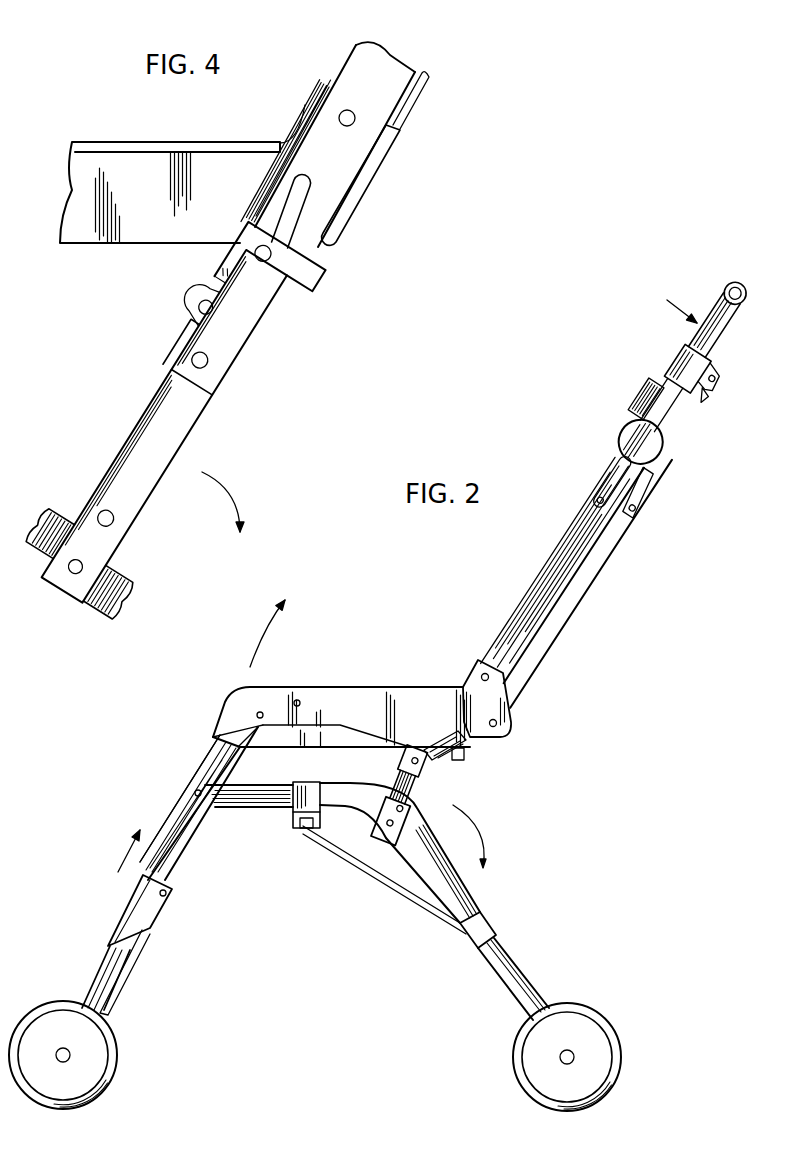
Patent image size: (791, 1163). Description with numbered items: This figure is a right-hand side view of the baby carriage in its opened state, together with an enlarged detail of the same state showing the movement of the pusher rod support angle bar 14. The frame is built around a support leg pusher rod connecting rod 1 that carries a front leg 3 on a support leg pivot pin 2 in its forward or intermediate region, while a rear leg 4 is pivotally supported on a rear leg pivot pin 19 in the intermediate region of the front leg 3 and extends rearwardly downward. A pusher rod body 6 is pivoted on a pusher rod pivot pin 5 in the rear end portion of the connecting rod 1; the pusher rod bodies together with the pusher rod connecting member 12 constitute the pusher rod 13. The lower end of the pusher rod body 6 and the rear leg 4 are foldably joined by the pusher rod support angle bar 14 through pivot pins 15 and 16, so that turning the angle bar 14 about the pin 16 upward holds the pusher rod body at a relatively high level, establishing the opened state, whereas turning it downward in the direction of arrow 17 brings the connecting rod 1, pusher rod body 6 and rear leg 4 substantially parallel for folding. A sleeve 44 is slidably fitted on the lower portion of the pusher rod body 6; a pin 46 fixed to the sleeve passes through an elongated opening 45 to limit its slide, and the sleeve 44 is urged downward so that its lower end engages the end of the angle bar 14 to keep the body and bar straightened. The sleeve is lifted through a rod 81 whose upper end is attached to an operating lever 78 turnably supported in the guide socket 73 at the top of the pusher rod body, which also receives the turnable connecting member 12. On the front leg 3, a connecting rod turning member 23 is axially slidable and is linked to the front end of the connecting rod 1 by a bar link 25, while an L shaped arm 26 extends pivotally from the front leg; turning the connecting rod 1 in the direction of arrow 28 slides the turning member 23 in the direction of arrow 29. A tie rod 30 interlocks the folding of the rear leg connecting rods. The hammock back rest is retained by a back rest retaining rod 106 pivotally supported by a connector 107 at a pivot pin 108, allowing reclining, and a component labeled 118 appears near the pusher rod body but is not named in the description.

In FIG. 4, the support leg pusher rod connecting rod 1 is at (110, 145).
In FIG. 2, the support leg pusher rod connecting rod 1 is at (296, 687).
In FIG. 2, the support leg pivot pin 2 is at (299, 701).
In FIG. 2, the front leg 3 is at (175, 818).
In FIG. 4, the rear leg 4 is at (58, 512).
In FIG. 2, the rear leg 4 is at (512, 962).
In FIG. 4, the pusher rod pivot pin 5 is at (338, 116).
In FIG. 2, the pusher rod pivot pin 5 is at (482, 675).
In FIG. 4, the pusher rod body 6 is at (343, 70).
In FIG. 2, the pusher rod body 6 is at (560, 556).
In FIG. 2, the pusher rod connecting member 12 is at (727, 290).
In FIG. 2, the pusher rod 13 is at (697, 318).
In FIG. 4, the pusher rod support angle bar 14 is at (173, 445).
In FIG. 2, the pusher rod support angle bar 14 is at (425, 800).
In FIG. 4, the pivot pin 15 is at (196, 306).
In FIG. 2, the pivot pin 15 is at (410, 760).
In FIG. 4, the pivot pin 16 is at (113, 518).
In FIG. 2, the pivot pin 16 is at (406, 812).
In FIG. 4, the arrow 17 is at (230, 497).
In FIG. 2, the arrow 17 is at (478, 832).
In FIG. 2, the rear leg pivot pin 19 is at (196, 790).
In FIG. 2, the connecting rod turning member 23 is at (135, 895).
In FIG. 2, the bar link 25 is at (200, 850).
In FIG. 2, the L shaped arm 26 is at (140, 962).
In FIG. 2, the arrow 28 is at (252, 629).
In FIG. 2, the arrow 29 is at (116, 850).
In FIG. 2, the tie rod 30 is at (366, 868).
In FIG. 4, the sleeve 44 is at (283, 300).
In FIG. 2, the sleeve 44 is at (440, 764).
In FIG. 4, the elongated opening 45 is at (305, 200).
In FIG. 4, the pin 46 is at (250, 260).
In FIG. 2, the guide socket 73 is at (680, 362).
In FIG. 2, the operating lever 78 is at (716, 392).
In FIG. 4, the rod 81 is at (410, 112).
In FIG. 2, the rod 81 is at (672, 432).
In FIG. 2, the back rest retaining rod 106 is at (612, 553).
In FIG. 2, the connector 107 is at (512, 735).
In FIG. 2, the pivot pin 108 is at (497, 728).
In FIG. 2, the release knob 118 is at (620, 438).